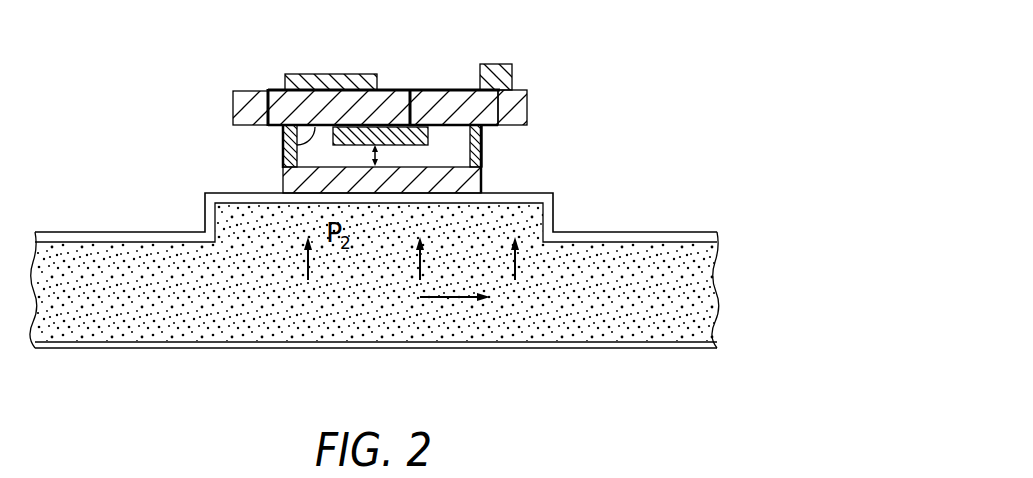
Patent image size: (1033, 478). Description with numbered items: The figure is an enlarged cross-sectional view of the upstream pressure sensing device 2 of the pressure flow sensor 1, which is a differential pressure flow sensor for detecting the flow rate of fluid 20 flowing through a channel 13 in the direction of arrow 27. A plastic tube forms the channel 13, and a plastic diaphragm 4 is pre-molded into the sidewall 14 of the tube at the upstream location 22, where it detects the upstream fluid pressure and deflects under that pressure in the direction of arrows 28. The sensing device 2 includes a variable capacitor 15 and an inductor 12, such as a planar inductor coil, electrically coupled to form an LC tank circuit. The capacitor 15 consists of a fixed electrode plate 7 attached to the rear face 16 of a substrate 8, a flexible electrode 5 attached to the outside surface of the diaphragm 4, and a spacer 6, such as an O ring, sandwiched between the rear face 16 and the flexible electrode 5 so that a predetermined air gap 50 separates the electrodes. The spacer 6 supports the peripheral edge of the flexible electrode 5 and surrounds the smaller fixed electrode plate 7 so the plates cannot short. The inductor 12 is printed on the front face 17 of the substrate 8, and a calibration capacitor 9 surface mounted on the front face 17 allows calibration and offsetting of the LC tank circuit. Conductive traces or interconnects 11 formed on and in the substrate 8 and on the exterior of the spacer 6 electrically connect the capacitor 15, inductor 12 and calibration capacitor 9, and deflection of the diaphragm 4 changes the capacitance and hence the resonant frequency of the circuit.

The pressure flow sensor 1 is at (740, 76).
The upstream pressure sensing device 2 is at (619, 73).
The diaphragm 4 is at (545, 194).
The flexible electrode 5 is at (283, 190).
The spacer 6 is at (283, 158).
The fixed electrode plate 7 is at (428, 141).
The substrate 8 is at (232, 103).
The calibration capacitor 9 is at (512, 73).
The conductive traces or interconnects 11 is at (266, 105).
The inductor 12 is at (332, 64).
The channel 13 is at (603, 349).
The sidewall 14 is at (633, 232).
The variable capacitor 15 is at (522, 168).
The rear face 16 is at (283, 143).
The front face 17 is at (243, 90).
The fluid 20 is at (372, 312).
The upstream location 22 is at (283, 312).
The arrow indicating flow direction 27 is at (457, 296).
The arrows indicating diaphragm deflection direction 28 is at (513, 262).
The air gap 50 is at (395, 125).